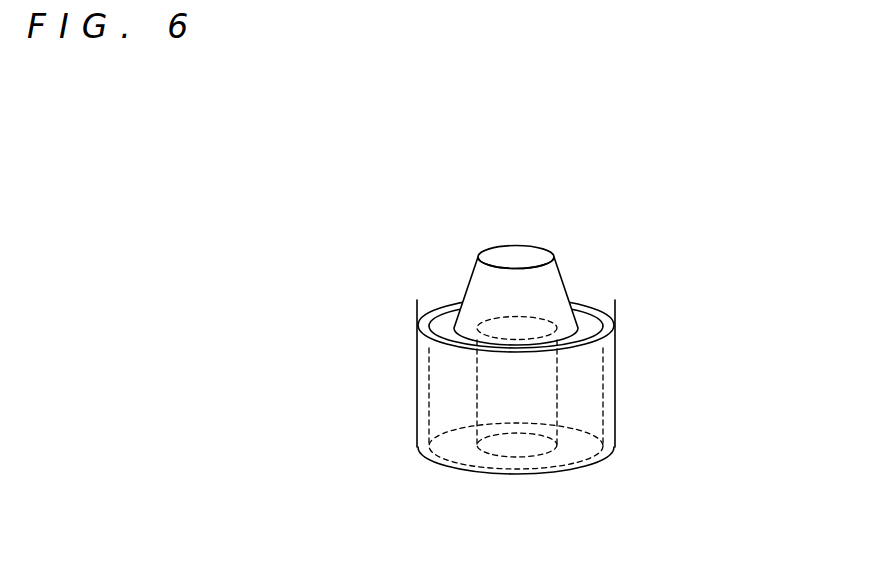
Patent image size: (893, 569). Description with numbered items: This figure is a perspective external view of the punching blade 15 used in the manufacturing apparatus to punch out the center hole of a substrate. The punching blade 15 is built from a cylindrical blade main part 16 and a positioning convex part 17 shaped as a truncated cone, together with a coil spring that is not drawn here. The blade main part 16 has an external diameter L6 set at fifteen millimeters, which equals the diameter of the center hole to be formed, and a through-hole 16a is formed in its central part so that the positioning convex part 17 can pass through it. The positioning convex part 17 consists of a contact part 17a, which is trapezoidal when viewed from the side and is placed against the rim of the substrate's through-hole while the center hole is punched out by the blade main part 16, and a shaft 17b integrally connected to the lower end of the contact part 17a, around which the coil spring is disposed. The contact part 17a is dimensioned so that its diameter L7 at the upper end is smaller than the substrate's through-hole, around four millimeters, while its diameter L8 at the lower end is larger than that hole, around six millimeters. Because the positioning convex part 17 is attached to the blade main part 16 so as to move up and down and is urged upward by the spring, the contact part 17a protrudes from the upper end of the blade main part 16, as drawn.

The punching blade 15 is at (378, 112).
The blade main part 16 is at (608, 408).
The through-hole 16a is at (585, 340).
The positioning convex part 17 is at (513, 238).
The contact part 17a is at (483, 287).
The shaft 17b is at (488, 397).
The diameter of the blade main part L6 is at (417, 300).
The diameter at upper end of the contact part L7 is at (477, 257).
The diameter at lower end of the contact part L8 is at (453, 328).